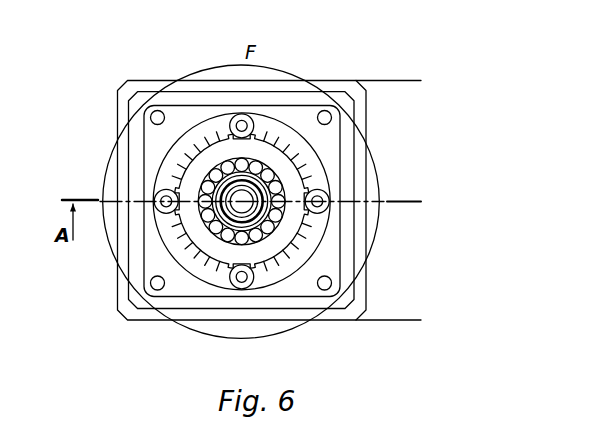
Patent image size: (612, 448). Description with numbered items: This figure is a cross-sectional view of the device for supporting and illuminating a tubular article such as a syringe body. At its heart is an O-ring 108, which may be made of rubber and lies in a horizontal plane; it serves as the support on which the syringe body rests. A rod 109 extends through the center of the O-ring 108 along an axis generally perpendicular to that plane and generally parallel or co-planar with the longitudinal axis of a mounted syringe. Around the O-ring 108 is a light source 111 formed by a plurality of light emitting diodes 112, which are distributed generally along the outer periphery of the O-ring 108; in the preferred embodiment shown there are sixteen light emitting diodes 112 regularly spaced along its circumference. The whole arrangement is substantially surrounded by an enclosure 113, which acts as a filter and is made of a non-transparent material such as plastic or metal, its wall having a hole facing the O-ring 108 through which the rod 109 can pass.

The O-ring 108 is at (218, 192).
The rod 109 is at (245, 207).
The light source 111 is at (302, 162).
The light emitting diodes 112 is at (257, 153).
The enclosure 113 is at (180, 310).